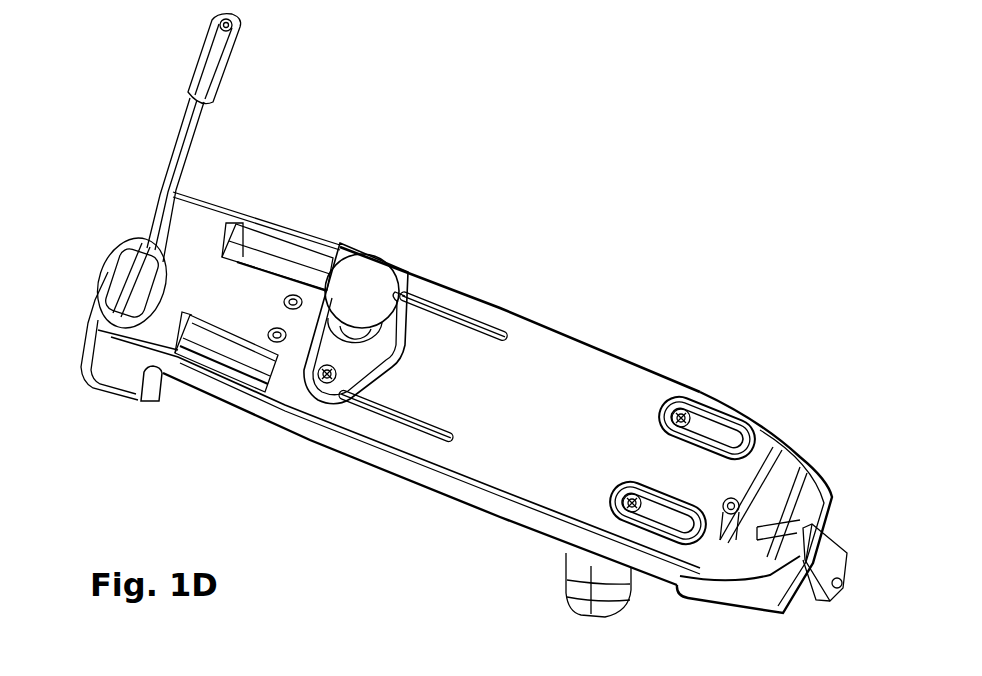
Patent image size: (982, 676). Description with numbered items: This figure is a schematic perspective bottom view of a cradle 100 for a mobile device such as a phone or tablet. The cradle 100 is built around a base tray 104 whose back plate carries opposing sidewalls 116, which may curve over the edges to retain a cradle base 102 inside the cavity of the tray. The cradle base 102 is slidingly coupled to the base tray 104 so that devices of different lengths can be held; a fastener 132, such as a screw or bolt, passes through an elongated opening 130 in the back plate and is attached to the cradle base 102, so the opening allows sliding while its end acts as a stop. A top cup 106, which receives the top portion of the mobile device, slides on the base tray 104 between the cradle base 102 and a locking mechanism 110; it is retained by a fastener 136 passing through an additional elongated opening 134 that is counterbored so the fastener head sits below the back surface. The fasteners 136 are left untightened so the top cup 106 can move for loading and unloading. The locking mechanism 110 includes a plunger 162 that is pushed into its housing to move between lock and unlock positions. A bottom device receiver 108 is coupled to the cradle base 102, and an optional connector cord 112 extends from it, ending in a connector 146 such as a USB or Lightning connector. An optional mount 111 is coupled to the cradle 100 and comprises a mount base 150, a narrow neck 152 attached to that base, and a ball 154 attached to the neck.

The cradle 100 is at (641, 268).
The cradle base 102 is at (237, 287).
The base tray 104 is at (618, 377).
The top cup 106 is at (577, 580).
The bottom device receiver 108 is at (125, 375).
The locking mechanism 110 is at (820, 463).
The mount 111 is at (413, 310).
The connector cord 112 is at (180, 137).
The sidewalls 116 is at (557, 527).
The elongated opening 130 is at (493, 333).
The fastener 132 is at (326, 384).
The additional elongated opening 134 is at (723, 413).
The fastener 136 is at (687, 410).
The connector 146 is at (230, 67).
The mount base 150 is at (320, 350).
The narrow neck 152 is at (356, 343).
The ball 154 is at (347, 275).
The plunger 162 is at (840, 547).